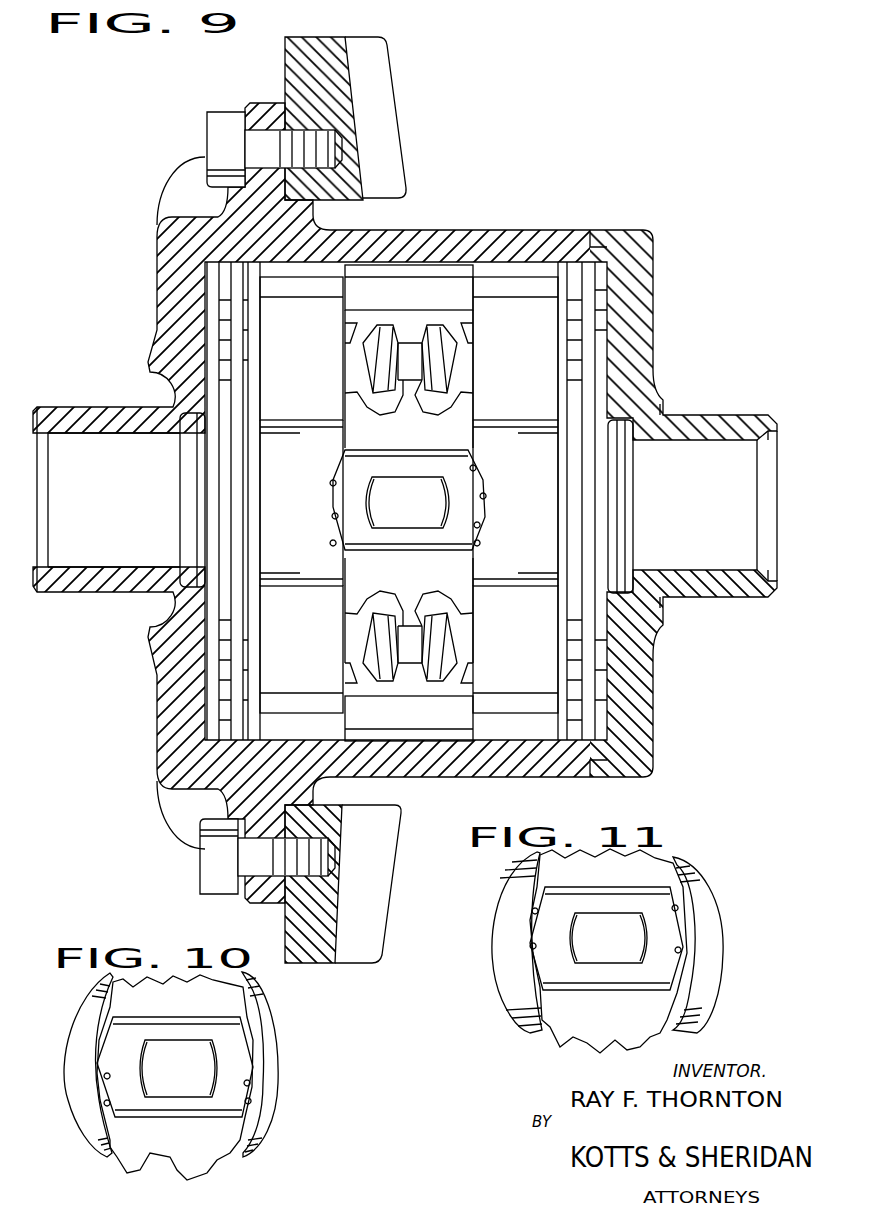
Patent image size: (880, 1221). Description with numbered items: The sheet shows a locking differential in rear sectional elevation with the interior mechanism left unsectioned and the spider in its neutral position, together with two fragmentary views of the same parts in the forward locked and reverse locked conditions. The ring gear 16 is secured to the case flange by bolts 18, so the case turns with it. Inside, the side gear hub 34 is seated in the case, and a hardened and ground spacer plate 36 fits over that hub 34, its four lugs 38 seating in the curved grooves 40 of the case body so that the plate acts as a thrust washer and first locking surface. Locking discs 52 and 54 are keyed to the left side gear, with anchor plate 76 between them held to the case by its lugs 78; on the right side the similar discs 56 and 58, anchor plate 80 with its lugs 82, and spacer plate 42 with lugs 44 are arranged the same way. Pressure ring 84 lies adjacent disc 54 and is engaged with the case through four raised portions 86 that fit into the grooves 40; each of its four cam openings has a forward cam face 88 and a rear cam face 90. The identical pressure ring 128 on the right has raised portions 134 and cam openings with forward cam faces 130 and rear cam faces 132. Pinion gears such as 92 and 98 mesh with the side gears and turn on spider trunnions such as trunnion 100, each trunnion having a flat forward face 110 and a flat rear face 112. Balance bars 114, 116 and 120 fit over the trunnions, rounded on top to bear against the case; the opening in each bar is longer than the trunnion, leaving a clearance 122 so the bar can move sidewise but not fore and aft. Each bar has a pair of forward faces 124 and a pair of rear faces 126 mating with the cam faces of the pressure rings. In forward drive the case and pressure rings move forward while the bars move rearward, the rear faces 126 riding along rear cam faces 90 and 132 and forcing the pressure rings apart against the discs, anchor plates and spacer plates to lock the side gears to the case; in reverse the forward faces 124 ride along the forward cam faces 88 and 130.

In FIG. 9, the ring gear 16 is at (378, 103).
In FIG. 9, the bolts 18 is at (200, 852).
In FIG. 9, the hub 34 is at (197, 462).
In FIG. 9, the spacer plate 36 is at (213, 297).
In FIG. 9, the lugs 38 is at (207, 713).
In FIG. 9, the curved grooves 40 is at (227, 262).
In FIG. 9, the spacer plate 42 is at (605, 387).
In FIG. 9, the lugs 44 is at (597, 722).
In FIG. 9, the locking disc 52 is at (225, 327).
In FIG. 9, the locking disc 54 is at (248, 383).
In FIG. 9, the locking disc 56 is at (567, 320).
In FIG. 9, the locking disc 58 is at (590, 367).
In FIG. 9, the anchor plate 76 is at (238, 352).
In FIG. 9, the lugs 78 is at (157, 771).
In FIG. 9, the anchor plate 80 is at (575, 338).
In FIG. 9, the lugs 82 is at (590, 730).
In FIG. 9, the pressure ring 84 is at (316, 365).
In FIG. 10, the pressure ring 84 is at (88, 1065).
In FIG. 11, the pressure ring 84 is at (517, 942).
In FIG. 9, the raised portions 86 is at (313, 285).
In FIG. 9, the forward cam face 88 is at (340, 462).
In FIG. 10, the forward cam face 88 is at (110, 1032).
In FIG. 11, the forward cam face 88 is at (540, 928).
In FIG. 9, the rear cam face 90 is at (332, 513).
In FIG. 10, the rear cam face 90 is at (110, 1090).
In FIG. 11, the rear cam face 90 is at (545, 960).
In FIG. 10, the pinion gear 92 is at (175, 1077).
In FIG. 11, the pinion gear 92 is at (608, 951).
In FIG. 9, the pinion gear 98 is at (373, 690).
In FIG. 9, the spider trunnion 100 is at (427, 514).
In FIG. 10, the spider trunnion 100 is at (192, 1079).
In FIG. 11, the spider trunnion 100 is at (627, 953).
In FIG. 9, the flat forward face 110 is at (412, 477).
In FIG. 9, the flat rear face 112 is at (402, 538).
In FIG. 9, the balance bar 114 is at (359, 450).
In FIG. 10, the balance bar 114 is at (206, 1037).
In FIG. 11, the balance bar 114 is at (542, 942).
In FIG. 9, the balance bar 116 is at (416, 308).
In FIG. 9, the balance bar 120 is at (452, 725).
In FIG. 9, the opening 122 is at (460, 455).
In FIG. 9, the forward faces 124 is at (335, 480).
In FIG. 10, the forward faces 124 is at (135, 1017).
In FIG. 11, the forward faces 124 is at (640, 904).
In FIG. 9, the rear faces 126 is at (338, 540).
In FIG. 10, the rear faces 126 is at (115, 1104).
In FIG. 11, the rear faces 126 is at (660, 978).
In FIG. 9, the pressure ring 128 is at (522, 332).
In FIG. 10, the pressure ring 128 is at (260, 1064).
In FIG. 11, the pressure ring 128 is at (698, 945).
In FIG. 9, the forward cam face 130 is at (478, 469).
In FIG. 10, the forward cam face 130 is at (248, 1048).
In FIG. 11, the forward cam face 130 is at (688, 925).
In FIG. 9, the rear cam face 132 is at (480, 524).
In FIG. 10, the rear cam face 132 is at (248, 1106).
In FIG. 11, the rear cam face 132 is at (688, 960).
In FIG. 9, the raised portions 134 is at (500, 280).